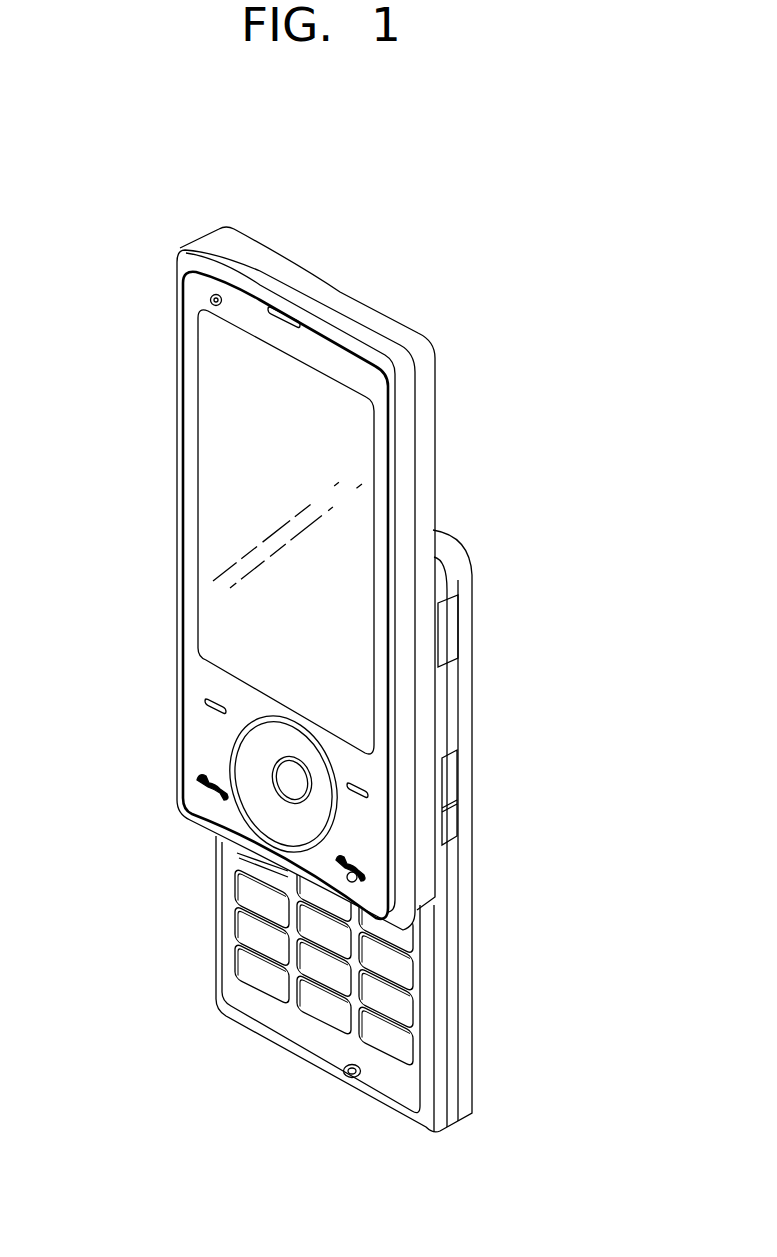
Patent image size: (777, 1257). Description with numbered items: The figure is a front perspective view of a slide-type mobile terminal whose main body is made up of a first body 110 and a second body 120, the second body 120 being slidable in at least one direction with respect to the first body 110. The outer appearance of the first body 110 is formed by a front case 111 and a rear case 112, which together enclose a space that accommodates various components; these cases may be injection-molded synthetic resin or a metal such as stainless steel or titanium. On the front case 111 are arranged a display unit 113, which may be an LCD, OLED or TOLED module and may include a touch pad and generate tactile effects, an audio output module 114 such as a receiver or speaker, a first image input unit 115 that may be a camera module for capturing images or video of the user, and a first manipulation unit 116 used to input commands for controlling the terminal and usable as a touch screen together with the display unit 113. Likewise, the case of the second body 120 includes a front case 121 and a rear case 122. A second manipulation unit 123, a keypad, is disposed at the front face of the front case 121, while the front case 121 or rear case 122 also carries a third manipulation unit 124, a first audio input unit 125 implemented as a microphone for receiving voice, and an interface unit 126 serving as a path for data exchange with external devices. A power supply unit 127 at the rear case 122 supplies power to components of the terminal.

The first body 110 is at (286, 578).
The front case 111 is at (407, 427).
The rear case 112 is at (425, 480).
The display unit 113 is at (218, 527).
The audio output module 114 is at (288, 320).
The first image input unit 115 is at (211, 298).
The first manipulation unit 116 is at (203, 748).
The second body 120 is at (337, 840).
The front case 121 is at (438, 720).
The rear case 122 is at (463, 678).
The second manipulation unit 123 is at (238, 958).
The third manipulation unit 124 is at (457, 832).
The first audio input unit 125 is at (350, 1076).
The interface unit 126 is at (452, 622).
The power supply unit 127 is at (465, 972).